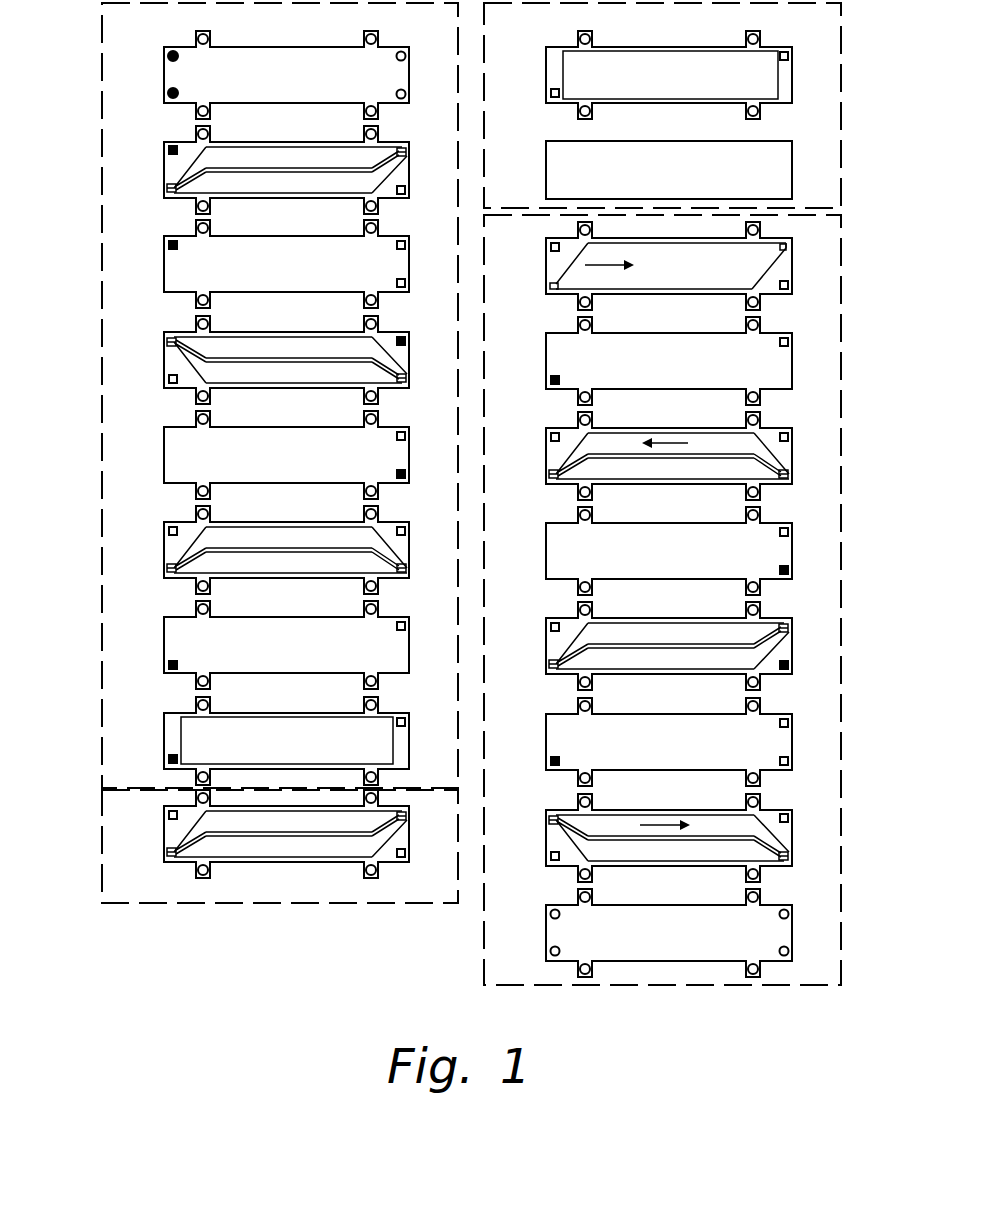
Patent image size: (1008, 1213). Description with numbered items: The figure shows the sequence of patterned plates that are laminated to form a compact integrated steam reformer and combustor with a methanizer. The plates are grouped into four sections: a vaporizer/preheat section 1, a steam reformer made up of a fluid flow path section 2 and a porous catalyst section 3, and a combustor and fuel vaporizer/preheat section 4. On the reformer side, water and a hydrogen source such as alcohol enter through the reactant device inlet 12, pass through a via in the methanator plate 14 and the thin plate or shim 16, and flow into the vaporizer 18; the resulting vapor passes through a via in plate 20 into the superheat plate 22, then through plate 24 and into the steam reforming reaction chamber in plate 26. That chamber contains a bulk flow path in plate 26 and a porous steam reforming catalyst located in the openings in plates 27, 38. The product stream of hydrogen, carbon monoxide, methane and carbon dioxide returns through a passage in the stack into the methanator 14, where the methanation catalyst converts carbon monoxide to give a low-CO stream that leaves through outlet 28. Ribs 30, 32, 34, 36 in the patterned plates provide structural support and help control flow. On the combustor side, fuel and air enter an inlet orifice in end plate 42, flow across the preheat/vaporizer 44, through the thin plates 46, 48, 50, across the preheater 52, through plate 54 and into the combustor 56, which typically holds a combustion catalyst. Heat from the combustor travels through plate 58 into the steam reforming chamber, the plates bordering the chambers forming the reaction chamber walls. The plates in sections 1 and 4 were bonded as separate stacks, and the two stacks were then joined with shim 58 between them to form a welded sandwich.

The vaporizer/preheat section 1 is at (86, 46).
The steam reformer fluid flow path 2 is at (86, 832).
The steam reformer porous catalyst section 3 is at (856, 46).
The combustor and fuel vaporizer/preheat section 4 is at (856, 256).
The reactant device inlet 12 is at (166, 55).
The outlet 28 is at (166, 93).
The methanator plate 14 is at (167, 168).
The thin plate (shim) 16 is at (167, 264).
The vaporizer 18 is at (167, 359).
The plate 20 is at (167, 454).
The superheat plate 22 is at (167, 548).
The plate 24 is at (167, 643).
The plate 27 is at (167, 739).
The steam reforming reaction chamber plate 26 is at (167, 832).
The rib 30 is at (372, 168).
The rib 32 is at (372, 360).
The rib 34 is at (372, 550).
The rib 36 is at (372, 836).
The plate 38 is at (548, 73).
The plate (shim) 58 is at (548, 167).
The combustor 56 is at (548, 264).
The plate 54 is at (548, 359).
The preheater 52 is at (548, 454).
The thin plate 50 is at (548, 549).
The thin plate 48 is at (548, 644).
The thin plate 46 is at (548, 739).
The preheat/vaporizer 44 is at (548, 835).
The end plate 42 is at (548, 930).